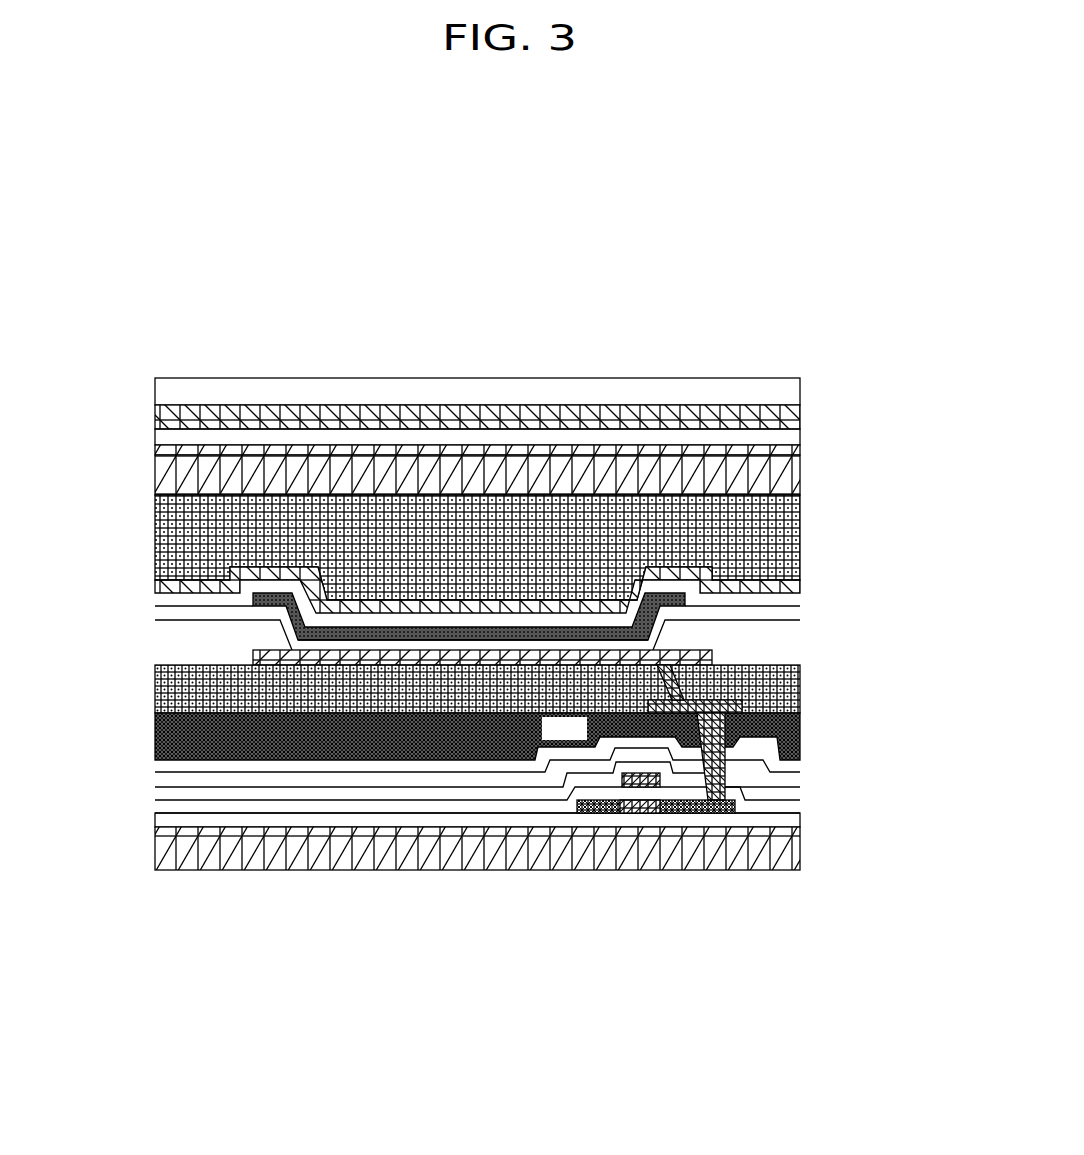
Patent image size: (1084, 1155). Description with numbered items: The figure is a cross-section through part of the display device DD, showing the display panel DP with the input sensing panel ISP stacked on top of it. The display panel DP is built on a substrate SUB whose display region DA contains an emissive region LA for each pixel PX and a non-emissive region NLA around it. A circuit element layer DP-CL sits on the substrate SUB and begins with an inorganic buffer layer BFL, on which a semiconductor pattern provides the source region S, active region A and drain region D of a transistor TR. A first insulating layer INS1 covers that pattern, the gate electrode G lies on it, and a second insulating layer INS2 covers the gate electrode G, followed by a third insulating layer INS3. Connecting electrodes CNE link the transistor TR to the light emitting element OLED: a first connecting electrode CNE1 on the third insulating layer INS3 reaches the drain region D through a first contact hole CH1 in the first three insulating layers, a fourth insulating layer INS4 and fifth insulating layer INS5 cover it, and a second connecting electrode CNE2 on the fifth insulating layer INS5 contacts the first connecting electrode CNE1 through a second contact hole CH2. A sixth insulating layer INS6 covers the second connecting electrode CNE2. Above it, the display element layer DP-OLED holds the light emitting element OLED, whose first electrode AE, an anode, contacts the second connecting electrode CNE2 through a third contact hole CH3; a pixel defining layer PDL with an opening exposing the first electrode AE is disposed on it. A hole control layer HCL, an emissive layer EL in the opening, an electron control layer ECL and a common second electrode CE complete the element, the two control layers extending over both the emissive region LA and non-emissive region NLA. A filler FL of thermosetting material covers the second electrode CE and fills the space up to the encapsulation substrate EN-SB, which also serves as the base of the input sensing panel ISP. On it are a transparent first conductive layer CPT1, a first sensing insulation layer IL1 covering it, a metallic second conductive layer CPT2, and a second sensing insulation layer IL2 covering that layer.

The display device DD is at (853, 174).
The display region DA is at (800, 378).
The non-emissive region NLA is at (287, 235).
The emissive region LA is at (653, 650).
The input sensing panel ISP is at (557, 401).
The second sensing insulation layer IL2 is at (800, 391).
The second conductive layer CPT2 is at (800, 417).
The first sensing insulation layer IL1 is at (800, 437).
The first conductive layer CPT1 is at (800, 450).
The display panel DP is at (494, 611).
The encapsulation substrate EN-SB is at (800, 475).
The filler FL is at (800, 537).
The display element layer DP-OLED is at (472, 459).
The light emitting element OLED is at (477, 459).
The first electrode AE is at (360, 650).
The hole control layer HCL is at (420, 640).
The emissive layer EL is at (473, 627).
The electron control layer ECL is at (532, 613).
The second electrode CE is at (585, 600).
The pixel defining layer PDL is at (800, 641).
The circuit element layer DP-CL is at (477, 806).
The third contact hole CH3 is at (690, 660).
The sixth insulating layer INS6 is at (800, 692).
The second contact hole CH2 is at (722, 695).
The fifth insulating layer INS5 is at (800, 740).
The fourth insulating layer INS4 is at (800, 766).
The third insulating layer INS3 is at (800, 780).
The second insulating layer INS2 is at (800, 793).
The first insulating layer INS1 is at (800, 806).
The buffer layer BFL is at (800, 820).
The substrate SUB is at (800, 850).
The first contact hole CH1 is at (665, 716).
The transistor TR is at (637, 871).
The gate electrode G is at (620, 778).
The source region S is at (597, 806).
The active region A is at (640, 813).
The drain region D is at (680, 806).
The connecting electrodes CNE is at (726, 817).
The first connecting electrode CNE1 is at (742, 713).
The second connecting electrode CNE2 is at (724, 745).
The pixel PX is at (904, 1060).